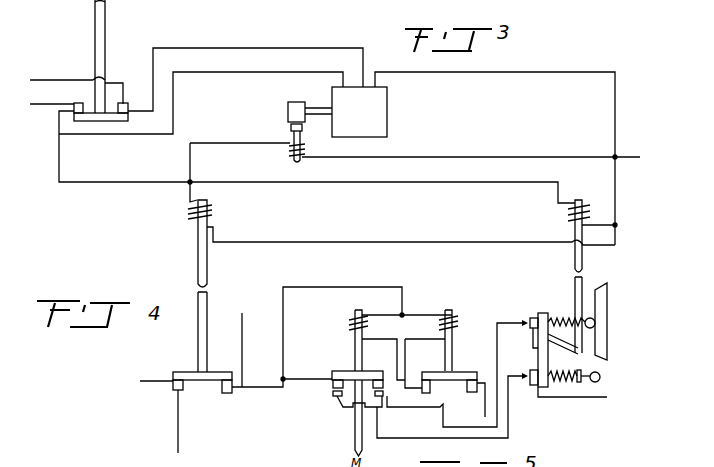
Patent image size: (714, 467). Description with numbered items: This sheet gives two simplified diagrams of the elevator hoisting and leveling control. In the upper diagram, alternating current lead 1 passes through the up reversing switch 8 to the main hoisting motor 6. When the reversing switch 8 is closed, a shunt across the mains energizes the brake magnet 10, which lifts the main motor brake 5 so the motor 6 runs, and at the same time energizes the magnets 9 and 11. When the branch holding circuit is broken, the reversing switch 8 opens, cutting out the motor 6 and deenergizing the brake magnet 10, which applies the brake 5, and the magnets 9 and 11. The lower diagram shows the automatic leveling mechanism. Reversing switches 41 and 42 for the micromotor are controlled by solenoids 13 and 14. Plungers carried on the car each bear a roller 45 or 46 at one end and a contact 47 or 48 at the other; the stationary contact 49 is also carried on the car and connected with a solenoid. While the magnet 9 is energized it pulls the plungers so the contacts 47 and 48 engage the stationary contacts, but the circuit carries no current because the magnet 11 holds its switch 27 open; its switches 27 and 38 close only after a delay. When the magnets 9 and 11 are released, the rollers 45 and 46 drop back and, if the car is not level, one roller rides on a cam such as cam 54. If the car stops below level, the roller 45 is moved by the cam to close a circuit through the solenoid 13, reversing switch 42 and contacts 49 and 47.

In FIG. 3, the main motor brake 5 is at (288, 128).
In FIG. 3, the main hoisting motor 6 is at (359, 112).
In FIG. 3, the up reversing switch 8 is at (85, 60).
In FIG. 3, the magnet 9 is at (567, 236).
In FIG. 3, the brake magnet 10 is at (308, 146).
In FIG. 3, the magnet 11 is at (187, 243).
In FIG. 4, the solenoid 13 is at (387, 349).
In FIG. 4, the solenoid 14 is at (459, 340).
In FIG. 4, the alternating current lead 1 is at (234, 350).
In FIG. 4, the switch 27 is at (240, 386).
In FIG. 4, the switch 38 is at (173, 385).
In FIG. 4, the reversing switch 41 is at (348, 393).
In FIG. 4, the reversing switch 42 is at (448, 386).
In FIG. 4, the roller 45 is at (586, 318).
In FIG. 4, the roller 46 is at (600, 380).
In FIG. 4, the contact 47 is at (556, 300).
In FIG. 4, the contact 48 is at (535, 383).
In FIG. 4, the stationary contact 49 is at (520, 314).
In FIG. 4, the cam 54 is at (608, 323).